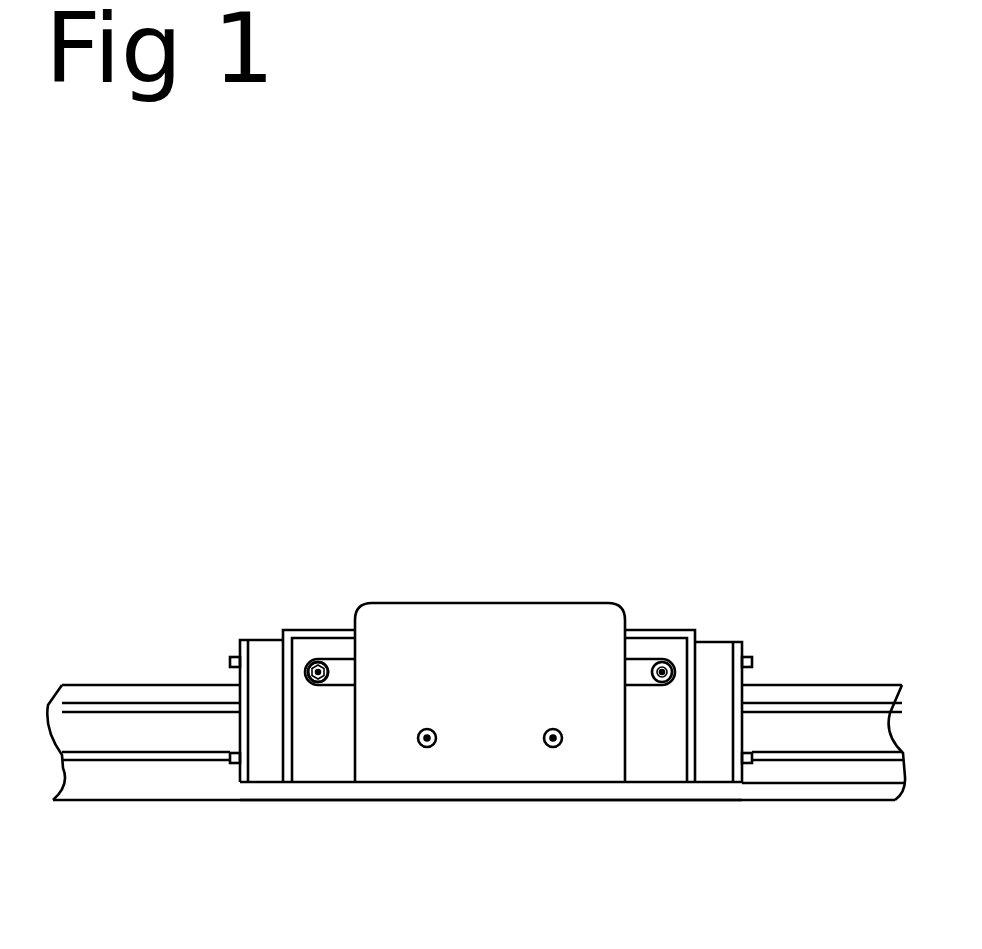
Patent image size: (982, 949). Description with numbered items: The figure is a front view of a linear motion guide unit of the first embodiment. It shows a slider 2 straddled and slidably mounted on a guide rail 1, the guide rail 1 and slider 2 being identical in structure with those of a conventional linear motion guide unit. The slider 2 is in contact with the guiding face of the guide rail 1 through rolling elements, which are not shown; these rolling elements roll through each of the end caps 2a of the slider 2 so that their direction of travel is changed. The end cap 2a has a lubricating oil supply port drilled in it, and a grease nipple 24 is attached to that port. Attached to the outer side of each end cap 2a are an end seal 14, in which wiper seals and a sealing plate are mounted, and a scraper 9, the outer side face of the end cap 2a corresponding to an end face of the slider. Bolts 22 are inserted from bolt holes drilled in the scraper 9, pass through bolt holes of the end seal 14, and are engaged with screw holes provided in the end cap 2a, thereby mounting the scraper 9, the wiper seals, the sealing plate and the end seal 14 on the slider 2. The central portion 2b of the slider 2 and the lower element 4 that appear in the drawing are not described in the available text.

The guide rail 1 is at (797, 690).
The slider 2 is at (508, 641).
The end cap 2a is at (317, 648).
The main body of slider 2b is at (450, 623).
The bottom plate 4 is at (685, 747).
The scraper 9 is at (245, 782).
The end seal 14 is at (258, 631).
The bolt 22 is at (233, 660).
The grease nipple 24 is at (320, 683).